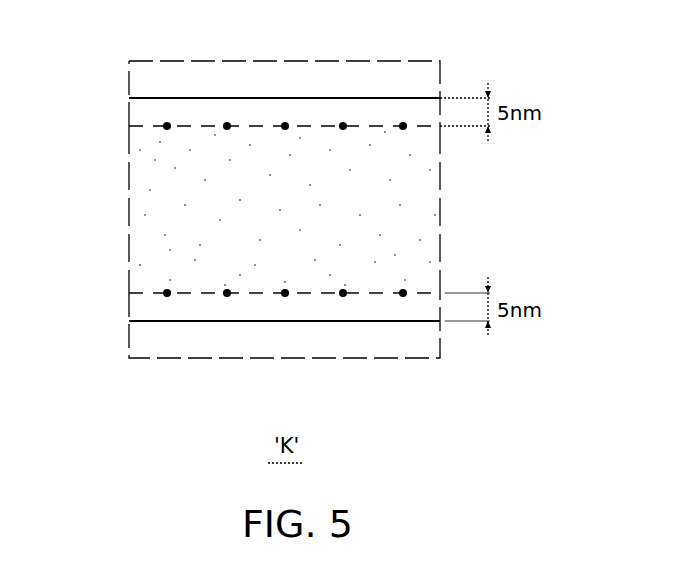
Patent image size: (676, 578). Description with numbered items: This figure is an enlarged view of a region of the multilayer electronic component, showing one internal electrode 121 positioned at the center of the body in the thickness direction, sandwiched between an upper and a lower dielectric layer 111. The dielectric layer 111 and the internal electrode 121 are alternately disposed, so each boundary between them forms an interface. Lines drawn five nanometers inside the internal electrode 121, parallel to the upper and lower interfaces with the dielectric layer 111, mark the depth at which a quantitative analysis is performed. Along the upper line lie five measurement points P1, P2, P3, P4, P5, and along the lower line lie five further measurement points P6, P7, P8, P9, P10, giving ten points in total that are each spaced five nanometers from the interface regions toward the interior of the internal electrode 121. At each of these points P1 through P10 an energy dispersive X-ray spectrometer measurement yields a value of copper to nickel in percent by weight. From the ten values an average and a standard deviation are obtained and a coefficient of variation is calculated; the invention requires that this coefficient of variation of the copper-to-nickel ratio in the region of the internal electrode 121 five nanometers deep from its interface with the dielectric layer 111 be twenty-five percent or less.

The dielectric layer 111 is at (138, 73).
The internal electrode 121 is at (137, 214).
The measurement point p1 P1 is at (167, 122).
The measurement point p2 P2 is at (227, 122).
The measurement point p3 P3 is at (285, 122).
The measurement point p4 P4 is at (343, 122).
The measurement point p5 P5 is at (403, 122).
The measurement point p6 P6 is at (167, 297).
The measurement point p7 P7 is at (227, 297).
The measurement point p8 P8 is at (285, 297).
The measurement point p9 P9 is at (343, 297).
The measurement point p10 P10 is at (403, 297).